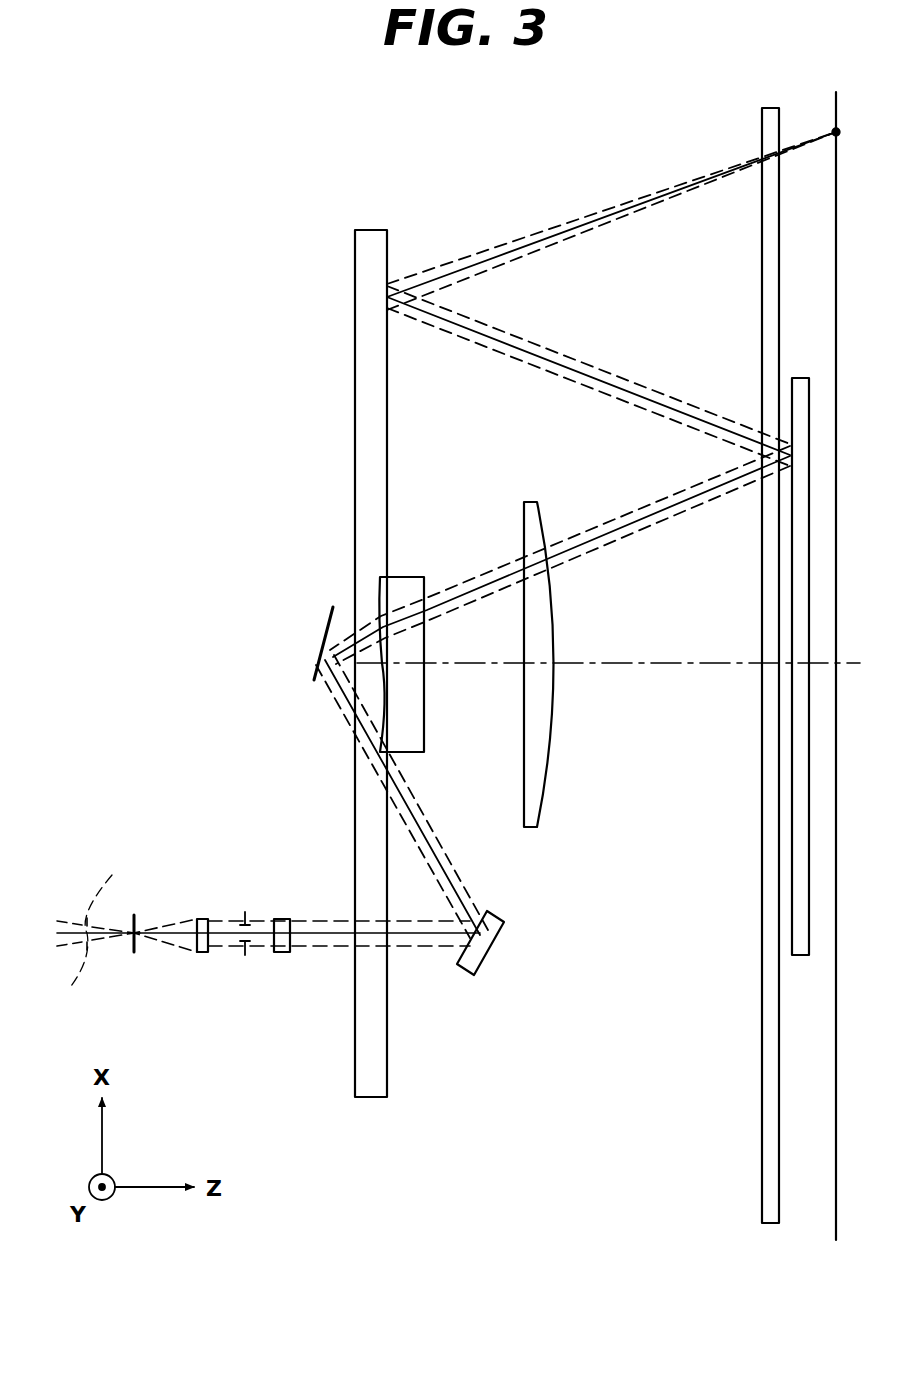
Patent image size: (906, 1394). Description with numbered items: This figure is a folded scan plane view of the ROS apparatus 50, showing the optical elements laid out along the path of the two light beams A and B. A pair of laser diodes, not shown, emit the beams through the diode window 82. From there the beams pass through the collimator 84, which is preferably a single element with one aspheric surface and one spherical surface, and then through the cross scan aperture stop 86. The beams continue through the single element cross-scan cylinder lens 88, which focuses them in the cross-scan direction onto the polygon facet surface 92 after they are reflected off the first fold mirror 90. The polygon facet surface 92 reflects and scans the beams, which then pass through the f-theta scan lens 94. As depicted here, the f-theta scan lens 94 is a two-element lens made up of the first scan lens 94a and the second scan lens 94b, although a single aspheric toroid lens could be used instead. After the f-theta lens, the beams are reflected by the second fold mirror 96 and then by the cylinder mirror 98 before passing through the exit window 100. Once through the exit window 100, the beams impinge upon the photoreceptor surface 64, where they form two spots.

The ROS apparatus 50 is at (172, 480).
The photoreceptor surface 64 is at (836, 182).
The diode window 82 is at (136, 907).
The collimator 84 is at (200, 918).
The cross scan aperture stop 86 is at (245, 972).
The cross-scan cylinder lens 88 is at (285, 918).
The first fold mirror 90 is at (485, 965).
The polygon facet surface 92 is at (328, 620).
The f-theta scan lens 94 is at (472, 485).
The first scan lens 94a is at (410, 752).
The second scan lens 94b is at (545, 800).
The second fold mirror 96 is at (795, 378).
The cylinder mirror 98 is at (356, 260).
The exit window 100 is at (762, 132).